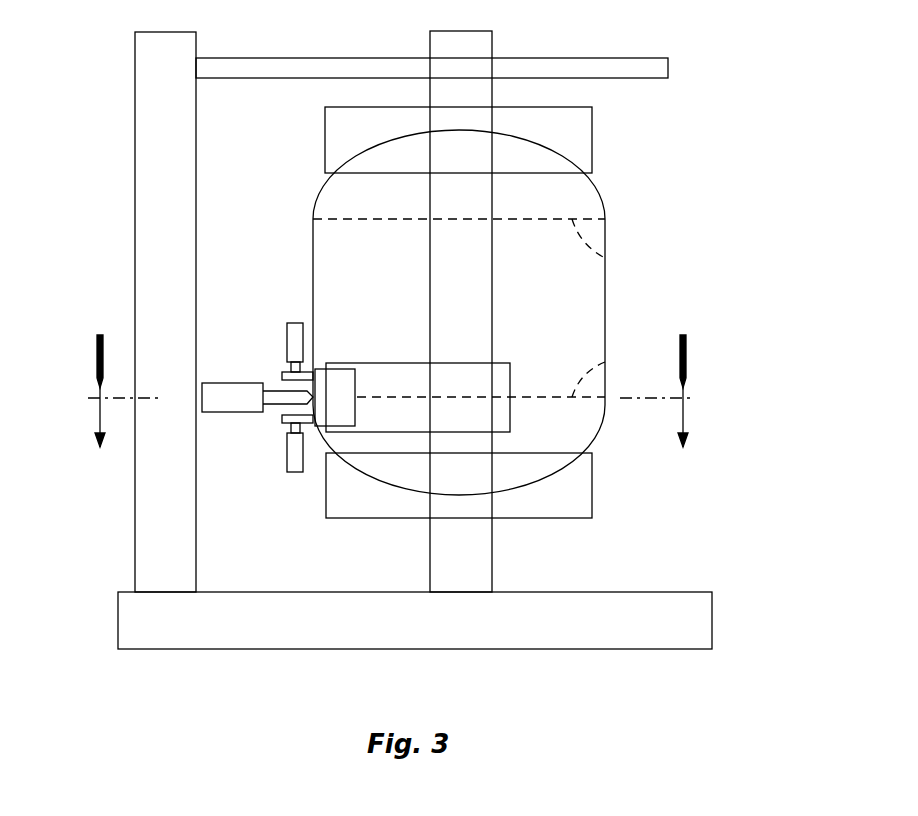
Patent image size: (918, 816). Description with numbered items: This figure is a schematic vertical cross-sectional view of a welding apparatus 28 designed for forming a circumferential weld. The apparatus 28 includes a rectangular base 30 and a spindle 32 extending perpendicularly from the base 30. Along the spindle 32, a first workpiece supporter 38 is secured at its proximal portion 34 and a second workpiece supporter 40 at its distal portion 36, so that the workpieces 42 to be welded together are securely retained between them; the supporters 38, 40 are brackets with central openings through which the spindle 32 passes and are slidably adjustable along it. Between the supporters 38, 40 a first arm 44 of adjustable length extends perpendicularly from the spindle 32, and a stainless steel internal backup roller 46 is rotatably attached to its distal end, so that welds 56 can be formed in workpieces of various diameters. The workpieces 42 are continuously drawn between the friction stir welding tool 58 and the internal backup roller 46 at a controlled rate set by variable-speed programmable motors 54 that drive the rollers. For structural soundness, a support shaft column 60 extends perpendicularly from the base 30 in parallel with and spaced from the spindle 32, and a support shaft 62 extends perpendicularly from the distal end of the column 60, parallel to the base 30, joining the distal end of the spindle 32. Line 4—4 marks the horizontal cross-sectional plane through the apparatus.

The welding apparatus 28 is at (748, 108).
The rectangular base 30 is at (703, 613).
The spindle 32 is at (483, 45).
The proximal portion 34 is at (408, 567).
The distal portion 36 is at (398, 93).
The first workpiece supporter 38 is at (585, 475).
The second workpiece supporter 40 is at (330, 133).
The workpieces 42 is at (300, 266).
The first arm 44 is at (390, 425).
The internal backup roller 46 is at (328, 417).
The programmable motors 54 is at (287, 342).
The circumferential welds 56 is at (605, 258).
The friction stir welding tool 58 is at (237, 357).
The support shaft column 60 is at (140, 83).
The support shaft 62 is at (655, 62).
The line 4— 4 is at (390, 409).